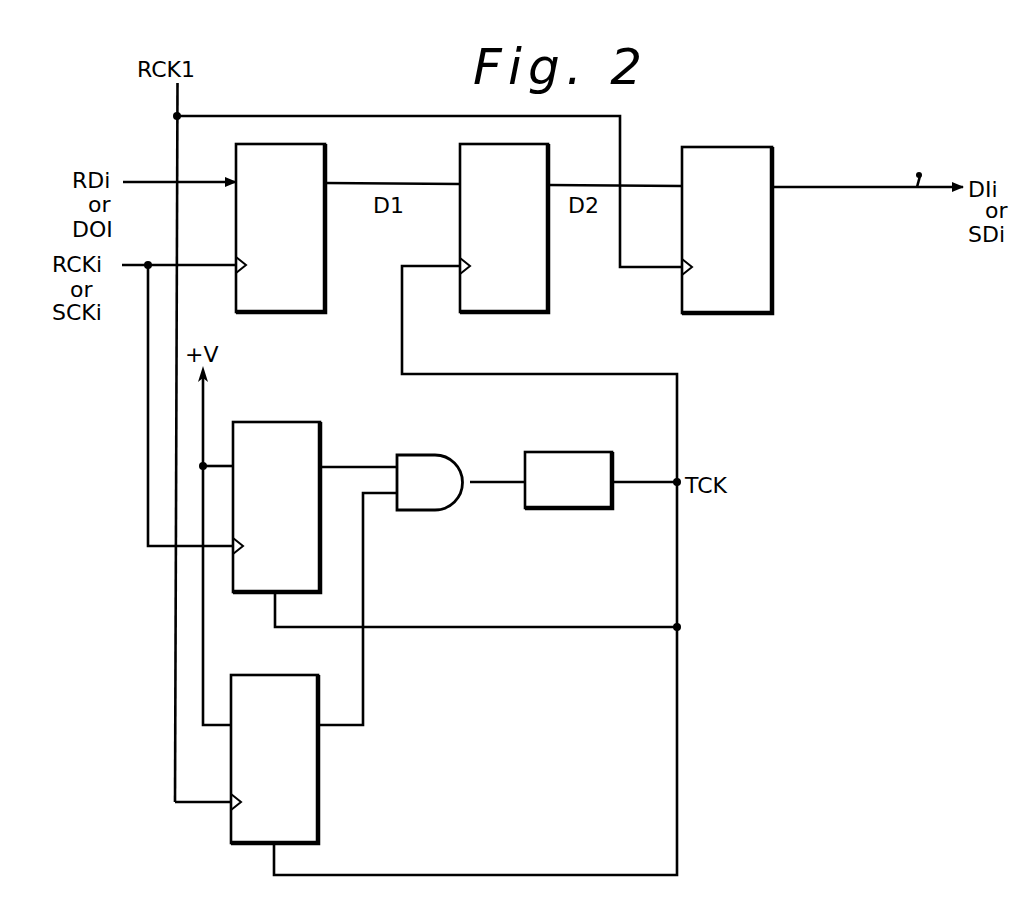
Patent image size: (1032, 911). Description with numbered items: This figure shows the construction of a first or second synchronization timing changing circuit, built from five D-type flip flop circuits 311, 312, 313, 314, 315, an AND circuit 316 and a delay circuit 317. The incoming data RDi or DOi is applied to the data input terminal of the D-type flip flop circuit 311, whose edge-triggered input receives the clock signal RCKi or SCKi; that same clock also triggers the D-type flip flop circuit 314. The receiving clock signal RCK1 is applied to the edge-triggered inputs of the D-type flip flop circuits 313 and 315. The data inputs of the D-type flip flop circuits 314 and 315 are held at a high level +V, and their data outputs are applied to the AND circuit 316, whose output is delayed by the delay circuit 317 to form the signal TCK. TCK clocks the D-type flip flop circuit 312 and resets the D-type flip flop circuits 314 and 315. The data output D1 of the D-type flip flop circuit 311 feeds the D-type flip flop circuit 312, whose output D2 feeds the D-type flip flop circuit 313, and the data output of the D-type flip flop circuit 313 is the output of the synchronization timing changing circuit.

The D-type flip flop circuit 311 is at (325, 147).
The D-type flip flop circuit 312 is at (540, 145).
The D-type flip flop circuit 313 is at (752, 147).
The D-type flip flop circuit 314 is at (280, 422).
The D-type flip flop circuit 315 is at (260, 675).
The AND circuit 316 is at (435, 455).
The delay circuit 317 is at (560, 452).